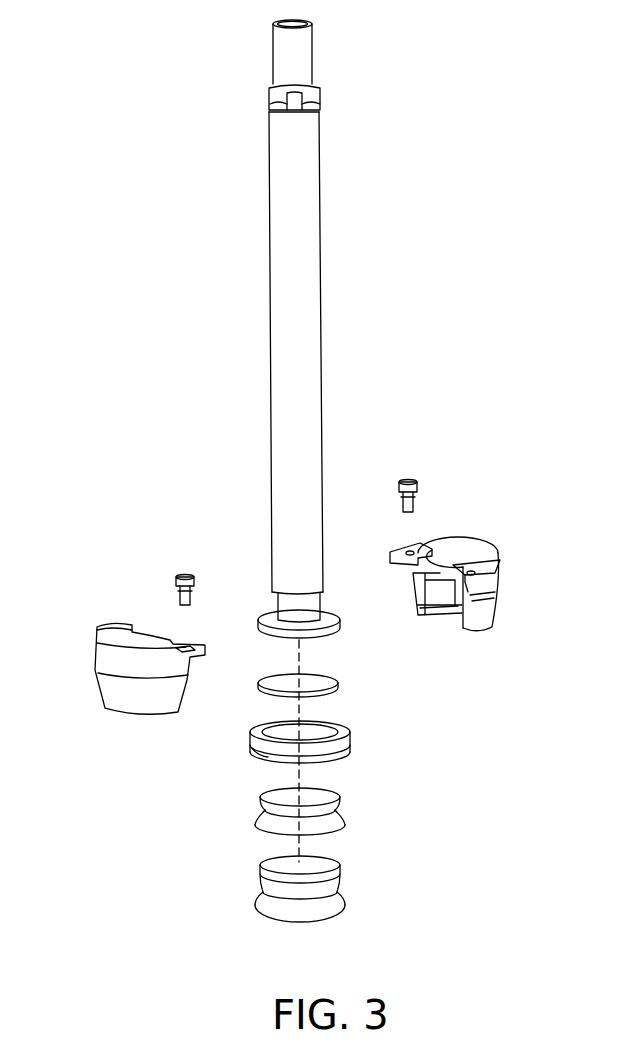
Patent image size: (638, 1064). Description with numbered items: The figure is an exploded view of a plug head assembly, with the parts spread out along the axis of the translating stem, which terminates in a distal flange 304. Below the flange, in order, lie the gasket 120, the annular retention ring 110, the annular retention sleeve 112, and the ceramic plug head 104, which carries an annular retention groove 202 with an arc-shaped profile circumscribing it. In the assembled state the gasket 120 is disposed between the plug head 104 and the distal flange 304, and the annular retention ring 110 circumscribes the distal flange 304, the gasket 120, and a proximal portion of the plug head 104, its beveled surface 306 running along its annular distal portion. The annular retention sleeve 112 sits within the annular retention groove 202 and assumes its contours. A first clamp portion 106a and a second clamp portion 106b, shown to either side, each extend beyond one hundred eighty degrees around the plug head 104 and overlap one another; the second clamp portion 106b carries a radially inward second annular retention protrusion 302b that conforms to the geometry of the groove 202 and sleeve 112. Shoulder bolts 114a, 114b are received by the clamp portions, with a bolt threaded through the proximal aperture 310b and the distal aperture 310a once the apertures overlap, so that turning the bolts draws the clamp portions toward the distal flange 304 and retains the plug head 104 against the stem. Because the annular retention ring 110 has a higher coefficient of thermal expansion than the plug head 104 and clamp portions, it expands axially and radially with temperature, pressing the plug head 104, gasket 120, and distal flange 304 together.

The plug head 104 is at (340, 863).
The first clamp portion 106a is at (154, 636).
The second clamp portion 106b is at (468, 584).
The annular retention ring 110 is at (307, 754).
The annular retention sleeve 112 is at (318, 818).
The shoulder bolt 114a is at (186, 574).
The shoulder bolt 114b is at (408, 480).
The gasket 120 is at (298, 688).
The annular retention groove 202 is at (340, 889).
The second annular retention protrusion 302b is at (430, 608).
The distal flange 304 is at (337, 614).
The beveled surface 306 is at (260, 755).
The distal aperture 310a is at (477, 572).
The proximal aperture 310b is at (188, 645).